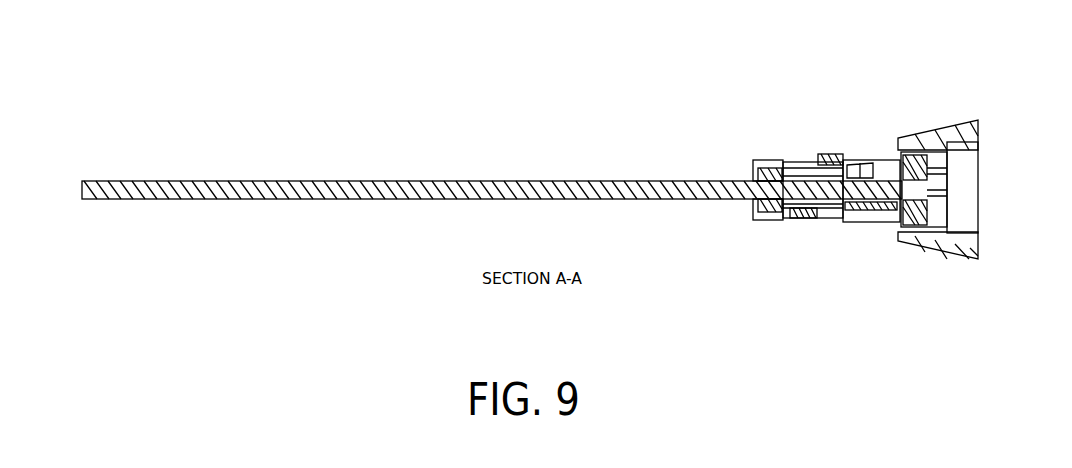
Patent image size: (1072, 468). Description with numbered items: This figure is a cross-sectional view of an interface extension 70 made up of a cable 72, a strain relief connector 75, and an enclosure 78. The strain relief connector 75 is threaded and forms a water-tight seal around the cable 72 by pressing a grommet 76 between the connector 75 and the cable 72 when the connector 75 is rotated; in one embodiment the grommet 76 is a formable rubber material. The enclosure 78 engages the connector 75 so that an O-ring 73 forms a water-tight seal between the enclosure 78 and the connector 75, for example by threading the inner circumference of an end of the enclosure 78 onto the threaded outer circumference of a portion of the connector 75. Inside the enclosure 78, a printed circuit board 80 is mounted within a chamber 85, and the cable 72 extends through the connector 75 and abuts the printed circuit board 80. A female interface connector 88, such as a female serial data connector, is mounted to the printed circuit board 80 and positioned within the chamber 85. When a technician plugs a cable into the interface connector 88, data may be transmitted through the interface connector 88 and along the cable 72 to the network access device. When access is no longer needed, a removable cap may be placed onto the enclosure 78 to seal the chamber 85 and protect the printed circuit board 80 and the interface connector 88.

The interface extension 70 is at (565, 52).
The cable 72 is at (407, 187).
The O-ring 73 is at (810, 158).
The strain relief connector 75 is at (782, 163).
The grommet 76 is at (755, 173).
The enclosure 78 is at (915, 138).
The printed circuit board 80 is at (897, 217).
The chamber 85 is at (953, 217).
The female interface connector 88 is at (930, 168).